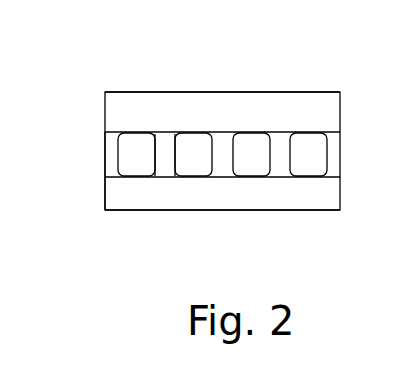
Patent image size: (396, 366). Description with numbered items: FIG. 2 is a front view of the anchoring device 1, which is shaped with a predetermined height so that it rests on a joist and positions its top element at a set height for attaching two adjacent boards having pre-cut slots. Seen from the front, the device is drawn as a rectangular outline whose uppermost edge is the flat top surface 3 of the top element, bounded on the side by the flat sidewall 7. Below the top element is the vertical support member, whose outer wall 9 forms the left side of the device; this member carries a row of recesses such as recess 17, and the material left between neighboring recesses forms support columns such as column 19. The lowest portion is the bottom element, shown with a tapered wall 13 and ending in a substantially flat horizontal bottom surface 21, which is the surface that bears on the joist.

The anchoring device 1 is at (316, 78).
The flat top surface 3 is at (255, 92).
The sidewall 7 is at (195, 92).
The wall 9 is at (112, 162).
The tapered wall 13 is at (145, 197).
The recess 17 is at (133, 148).
The support column 19 is at (165, 148).
The flat horizontal bottom surface 21 is at (233, 210).